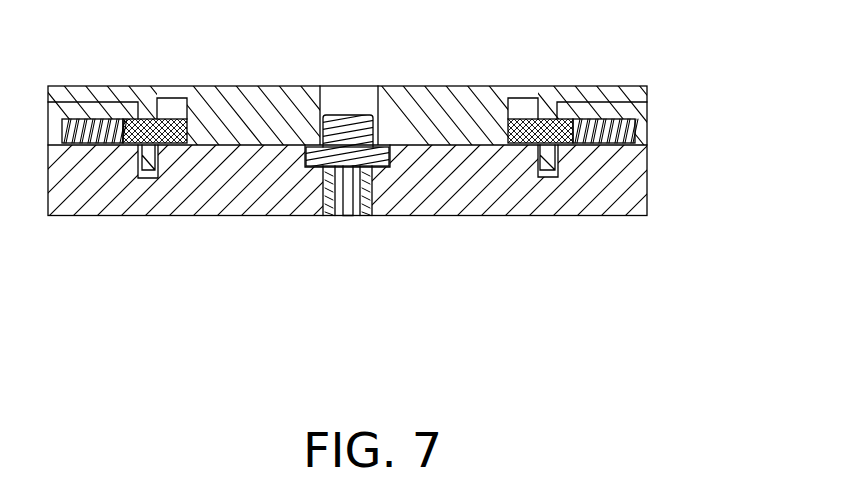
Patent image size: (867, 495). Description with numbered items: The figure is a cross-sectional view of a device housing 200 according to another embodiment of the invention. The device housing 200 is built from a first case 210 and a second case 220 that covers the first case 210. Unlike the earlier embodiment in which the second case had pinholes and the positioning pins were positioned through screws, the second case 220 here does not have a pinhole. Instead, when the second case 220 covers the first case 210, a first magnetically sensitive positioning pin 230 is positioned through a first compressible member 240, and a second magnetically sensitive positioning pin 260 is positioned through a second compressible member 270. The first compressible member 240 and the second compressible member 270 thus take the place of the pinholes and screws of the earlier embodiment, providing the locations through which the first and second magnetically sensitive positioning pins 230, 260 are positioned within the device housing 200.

The device housing 200 is at (758, 368).
The first case 210 is at (678, 226).
The second case 220 is at (678, 91).
The first magnetically sensitive positioning pin 230 is at (523, 127).
The first compressible member 240 is at (590, 127).
The second magnetically sensitive positioning pin 260 is at (168, 127).
The second compressible member 270 is at (113, 127).